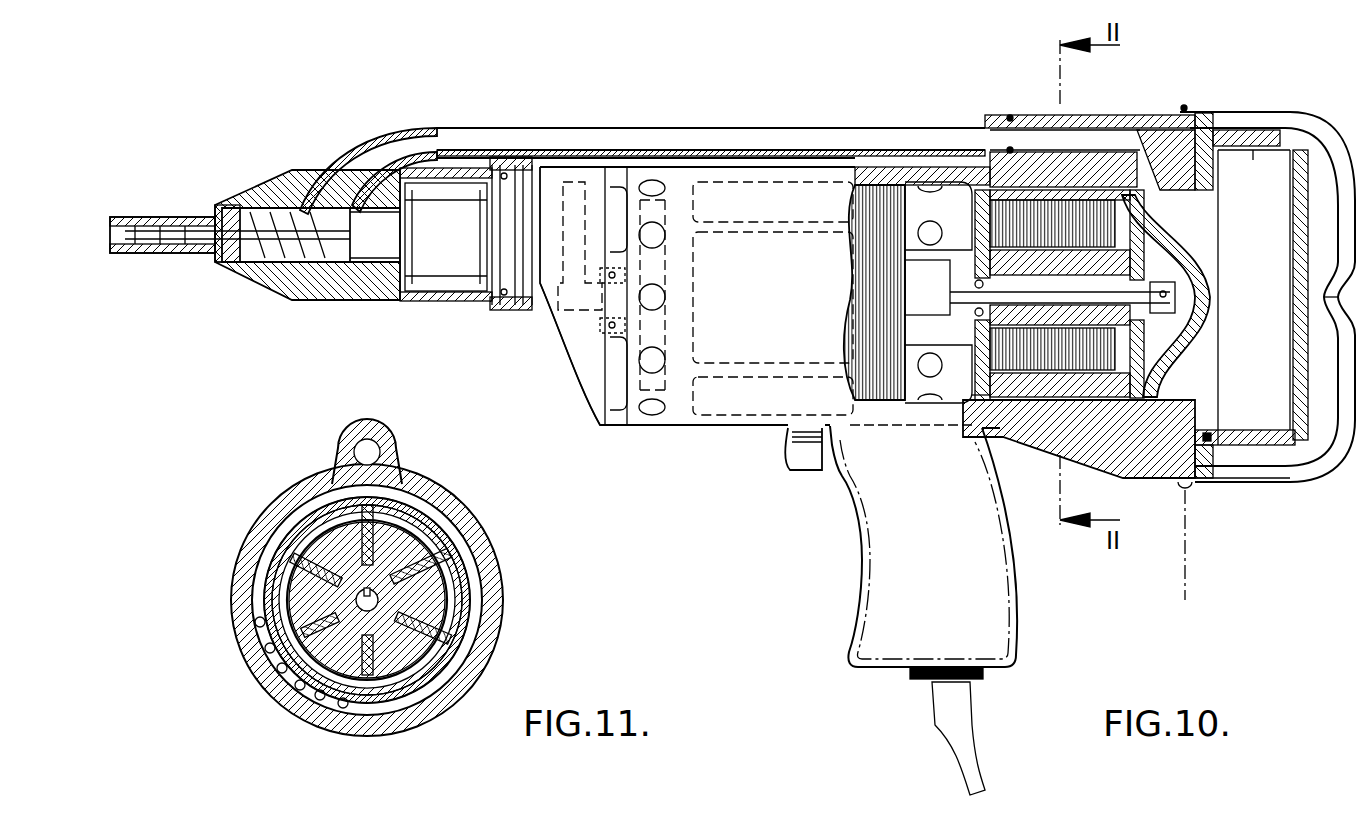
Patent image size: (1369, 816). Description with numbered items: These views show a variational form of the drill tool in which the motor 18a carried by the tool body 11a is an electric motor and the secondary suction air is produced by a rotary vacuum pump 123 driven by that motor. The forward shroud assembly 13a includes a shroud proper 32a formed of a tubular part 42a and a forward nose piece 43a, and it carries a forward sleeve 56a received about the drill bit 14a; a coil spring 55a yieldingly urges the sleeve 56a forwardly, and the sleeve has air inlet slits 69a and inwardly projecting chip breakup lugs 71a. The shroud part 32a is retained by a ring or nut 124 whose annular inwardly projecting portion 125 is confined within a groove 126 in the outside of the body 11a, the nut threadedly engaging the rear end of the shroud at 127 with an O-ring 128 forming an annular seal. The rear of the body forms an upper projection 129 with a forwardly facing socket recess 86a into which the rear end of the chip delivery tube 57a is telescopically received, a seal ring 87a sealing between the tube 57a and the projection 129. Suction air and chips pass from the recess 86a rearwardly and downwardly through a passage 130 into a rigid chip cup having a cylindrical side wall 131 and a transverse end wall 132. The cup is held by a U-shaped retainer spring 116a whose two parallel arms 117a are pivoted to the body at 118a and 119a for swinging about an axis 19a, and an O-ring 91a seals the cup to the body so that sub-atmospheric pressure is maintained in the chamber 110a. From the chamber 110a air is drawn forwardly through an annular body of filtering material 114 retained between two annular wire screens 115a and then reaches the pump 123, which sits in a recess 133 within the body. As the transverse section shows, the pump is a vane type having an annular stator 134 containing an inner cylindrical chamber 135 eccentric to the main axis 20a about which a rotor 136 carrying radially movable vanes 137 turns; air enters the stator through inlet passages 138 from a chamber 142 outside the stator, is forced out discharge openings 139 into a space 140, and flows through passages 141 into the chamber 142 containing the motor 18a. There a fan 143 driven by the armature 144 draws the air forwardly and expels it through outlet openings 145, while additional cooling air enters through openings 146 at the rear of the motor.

In FIG. 10, the tool body 11a is at (690, 428).
In FIG. 10, the forward shroud assembly 13a is at (433, 303).
In FIG. 10, the drill bit 14a is at (172, 253).
In FIG. 10, the electric motor 18a is at (757, 433).
In FIG. 10, the swinging axis 19a is at (1185, 557).
In FIG. 11, the main axis 20a is at (372, 605).
In FIG. 10, the shroud proper 32a is at (397, 303).
In FIG. 10, the tubular part 42a is at (473, 300).
In FIG. 10, the forward nose piece 43a is at (302, 294).
In FIG. 10, the coil spring 55a is at (267, 205).
In FIG. 10, the forward sleeve 56a is at (197, 257).
In FIG. 10, the chip delivery tube 57a is at (747, 127).
In FIG. 10, the air inlet slits 69a is at (147, 216).
In FIG. 10, the chip breakup lugs 71a is at (178, 217).
In FIG. 10, the socket recess 86a is at (1065, 128).
In FIG. 10, the seal ring 87a is at (1010, 116).
In FIG. 10, the O-ring 91a is at (1213, 435).
In FIG. 10, the chamber 110a is at (1290, 305).
In FIG. 10, the filtering material 114 is at (1197, 263).
In FIG. 10, the annular wire screens 115a is at (1190, 330).
In FIG. 10, the U-shaped retainer spring 116a is at (1313, 118).
In FIG. 10, the parallel arms 117a is at (1243, 483).
In FIG. 10, the pivot 118a is at (1185, 486).
In FIG. 10, the pivot 119a is at (1185, 106).
In FIG. 10, the rotary vacuum pump 123 is at (1042, 412).
In FIG. 10, the ring or nut 124 is at (507, 165).
In FIG. 10, the annular inwardly projecting portion 125 is at (535, 178).
In FIG. 10, the groove 126 is at (523, 277).
In FIG. 10, the threaded engagement 127 is at (496, 160).
In FIG. 10, the O-ring 128 is at (505, 183).
In FIG. 10, the upper projection 129 is at (1130, 114).
In FIG. 10, the passage 130 is at (1247, 110).
In FIG. 10, the cylindrical side wall 131 is at (1269, 166).
In FIG. 10, the transverse end wall 132 is at (1346, 290).
In FIG. 10, the chamber or recess 133 is at (1100, 413).
In FIG. 11, the stator 134 is at (467, 590).
In FIG. 11, the inner cylindrical chamber 135 is at (440, 620).
In FIG. 11, the rotor 136 is at (433, 606).
In FIG. 11, the vanes 137 is at (462, 552).
In FIG. 11, the inlet passages 138 is at (413, 510).
In FIG. 11, the discharge openings 139 is at (268, 600).
In FIG. 10, the space 140 is at (990, 425).
In FIG. 11, the space 140 is at (282, 528).
In FIG. 10, the passages 141 is at (968, 402).
In FIG. 11, the passages 141 is at (272, 665).
In FIG. 10, the chamber 142 is at (905, 398).
In FIG. 11, the chamber 142 is at (450, 528).
In FIG. 10, the fan 143 is at (658, 222).
In FIG. 10, the armature 144 is at (873, 262).
In FIG. 10, the outlet openings 145 is at (658, 360).
In FIG. 10, the openings 146 is at (950, 215).